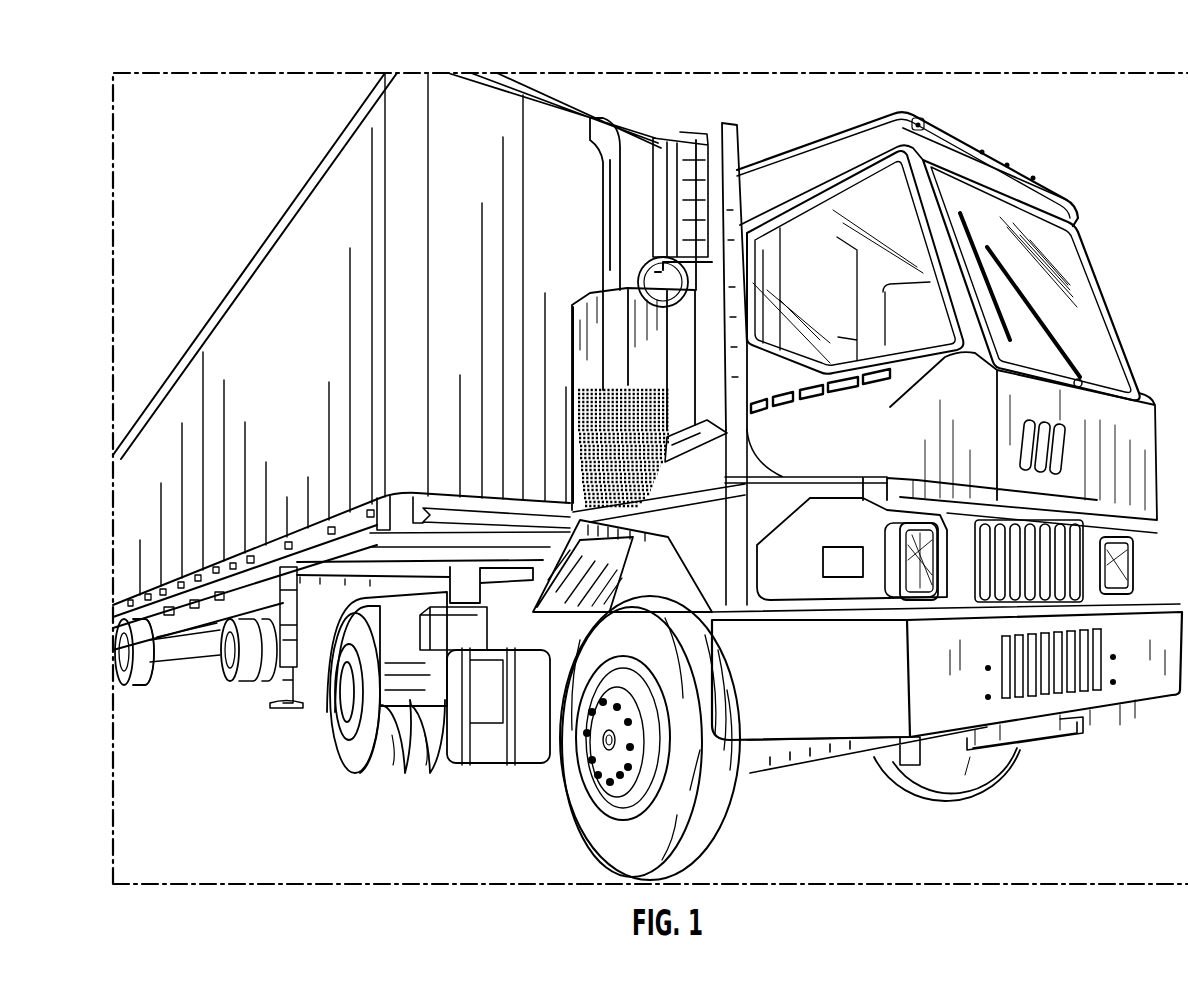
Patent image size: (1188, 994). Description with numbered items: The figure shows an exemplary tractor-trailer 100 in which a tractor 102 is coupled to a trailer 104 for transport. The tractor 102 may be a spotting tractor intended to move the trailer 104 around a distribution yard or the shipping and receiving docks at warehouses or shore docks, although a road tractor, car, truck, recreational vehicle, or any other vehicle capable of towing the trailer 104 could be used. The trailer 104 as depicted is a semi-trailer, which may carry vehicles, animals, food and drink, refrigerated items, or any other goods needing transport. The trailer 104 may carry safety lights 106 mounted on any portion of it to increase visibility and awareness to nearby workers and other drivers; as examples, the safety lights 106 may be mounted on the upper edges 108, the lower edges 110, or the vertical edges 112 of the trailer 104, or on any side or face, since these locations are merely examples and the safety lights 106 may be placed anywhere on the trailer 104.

The tractor-trailer 100 is at (1048, 53).
The tractor 102 is at (1052, 190).
The trailer 104 is at (390, 127).
The safety lights 106 is at (222, 626).
The upper edges 108 is at (241, 213).
The lower edges 110 is at (180, 632).
The vertical edges 112 is at (456, 168).